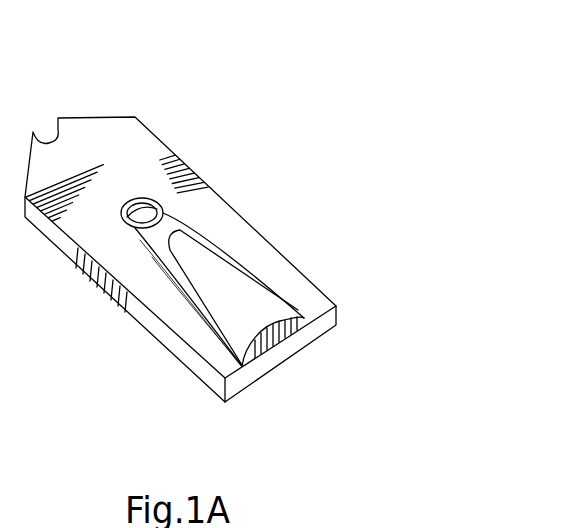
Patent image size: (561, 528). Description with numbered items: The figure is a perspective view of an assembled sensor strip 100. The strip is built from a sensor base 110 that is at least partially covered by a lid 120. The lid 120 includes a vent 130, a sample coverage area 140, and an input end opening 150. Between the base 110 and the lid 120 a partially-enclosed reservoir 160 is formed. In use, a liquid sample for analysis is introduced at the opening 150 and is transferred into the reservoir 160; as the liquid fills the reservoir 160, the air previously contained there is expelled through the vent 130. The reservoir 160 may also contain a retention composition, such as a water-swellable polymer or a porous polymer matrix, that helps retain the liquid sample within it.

The sensor strip 100 is at (327, 261).
The sensor base 110 is at (197, 377).
The lid 120 is at (83, 133).
The vent 130 is at (142, 210).
The sample coverage area 140 is at (236, 298).
The input end opening 150 is at (302, 320).
The partially-enclosed reservoir 160 is at (205, 272).